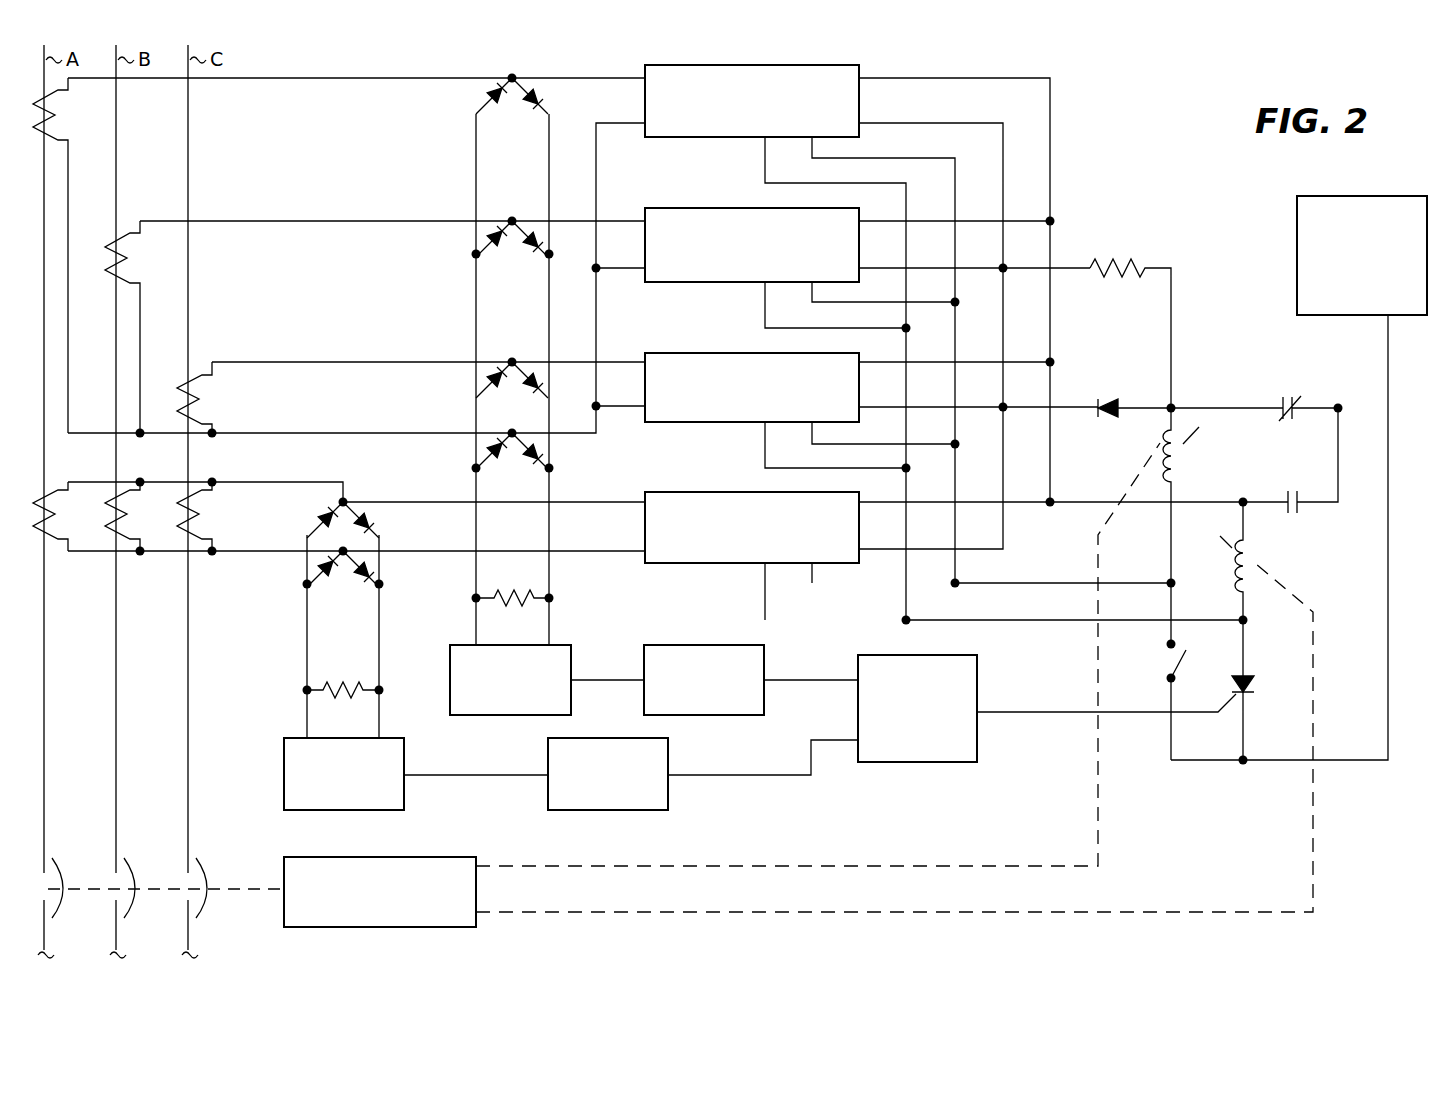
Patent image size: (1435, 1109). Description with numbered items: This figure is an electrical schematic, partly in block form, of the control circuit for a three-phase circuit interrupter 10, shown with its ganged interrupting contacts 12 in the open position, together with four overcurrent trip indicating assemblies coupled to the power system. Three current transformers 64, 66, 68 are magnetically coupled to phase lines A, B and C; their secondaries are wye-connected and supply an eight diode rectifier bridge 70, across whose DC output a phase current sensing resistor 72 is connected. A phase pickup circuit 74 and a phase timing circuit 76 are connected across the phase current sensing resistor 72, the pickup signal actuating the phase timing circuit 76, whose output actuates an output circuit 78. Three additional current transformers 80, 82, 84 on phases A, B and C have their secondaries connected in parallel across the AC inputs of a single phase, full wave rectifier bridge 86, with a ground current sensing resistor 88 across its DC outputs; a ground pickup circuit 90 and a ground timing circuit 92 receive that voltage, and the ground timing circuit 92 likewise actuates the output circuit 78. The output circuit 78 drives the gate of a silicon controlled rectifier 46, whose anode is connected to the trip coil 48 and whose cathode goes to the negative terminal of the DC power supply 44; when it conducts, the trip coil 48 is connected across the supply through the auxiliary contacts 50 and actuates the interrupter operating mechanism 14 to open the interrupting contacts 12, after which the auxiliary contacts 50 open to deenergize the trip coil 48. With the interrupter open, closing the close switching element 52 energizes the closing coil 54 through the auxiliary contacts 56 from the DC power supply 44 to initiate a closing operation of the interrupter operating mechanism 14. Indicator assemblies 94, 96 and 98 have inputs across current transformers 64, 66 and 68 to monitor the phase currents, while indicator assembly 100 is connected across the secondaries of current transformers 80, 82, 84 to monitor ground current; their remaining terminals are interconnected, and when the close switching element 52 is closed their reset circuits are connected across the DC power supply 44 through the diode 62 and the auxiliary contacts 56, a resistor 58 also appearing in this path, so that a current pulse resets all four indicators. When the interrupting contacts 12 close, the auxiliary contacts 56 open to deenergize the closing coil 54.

The circuit interrupter 10 is at (245, 935).
The interrupting contacts 12 is at (60, 862).
The interrupter operating mechanism 14 is at (445, 857).
The DC power supply 44 is at (1297, 214).
The silicon controlled rectifier 46 is at (1130, 690).
The trip coil 48 is at (1252, 561).
The auxiliary contacts 50 is at (1194, 460).
The close switching element 52 is at (1188, 671).
The closing coil 54 is at (1185, 495).
The auxiliary contacts 56 is at (1254, 396).
The resistor 58 is at (1130, 321).
The diode 62 is at (1132, 395).
The current transformer 64 is at (61, 255).
The current transformer 66 is at (133, 327).
The current transformer 68 is at (205, 397).
The eight diode rectifier bridge 70 is at (526, 490).
The phase current sensing resistor 72 is at (513, 585).
The phase pickup circuit 74 is at (571, 662).
The phase timing circuit 76 is at (764, 660).
The output circuit 78 is at (977, 682).
The current transformer 80 is at (59, 516).
The current transformer 82 is at (131, 516).
The current transformer 84 is at (203, 516).
The rectifier bridge 86 is at (357, 602).
The ground current sensing resistor 88 is at (343, 677).
The ground pickup circuit 90 is at (404, 758).
The ground timing circuit 92 is at (668, 758).
The indicator assembly 94 is at (690, 137).
The indicator assembly 96 is at (690, 282).
The indicator assembly 98 is at (690, 422).
The indicator assembly 100 is at (690, 563).